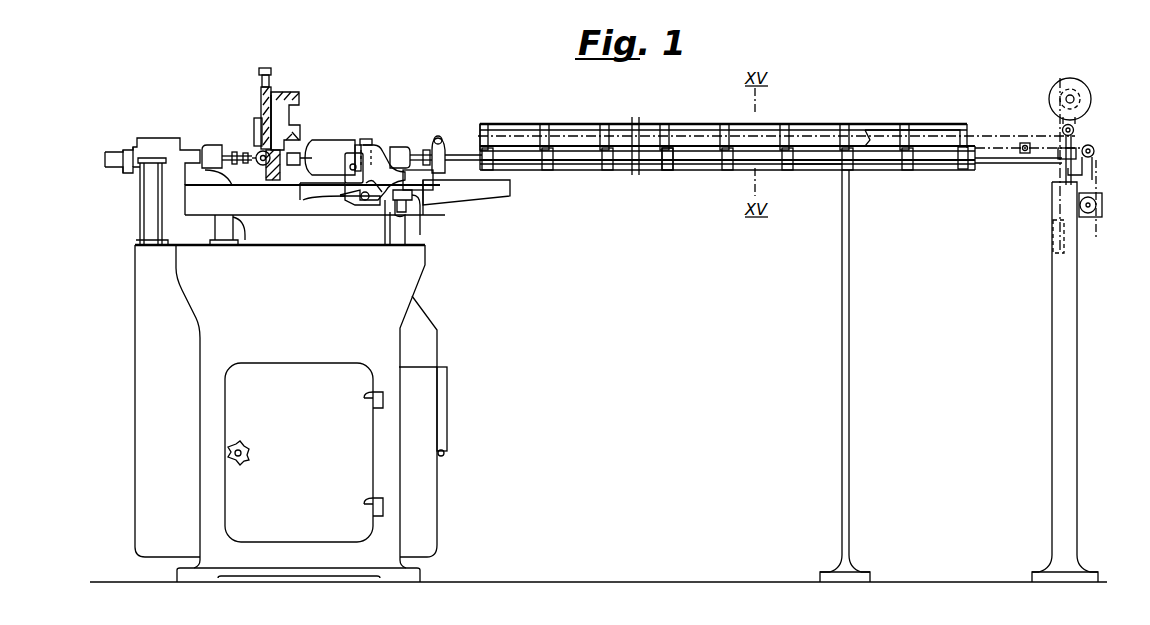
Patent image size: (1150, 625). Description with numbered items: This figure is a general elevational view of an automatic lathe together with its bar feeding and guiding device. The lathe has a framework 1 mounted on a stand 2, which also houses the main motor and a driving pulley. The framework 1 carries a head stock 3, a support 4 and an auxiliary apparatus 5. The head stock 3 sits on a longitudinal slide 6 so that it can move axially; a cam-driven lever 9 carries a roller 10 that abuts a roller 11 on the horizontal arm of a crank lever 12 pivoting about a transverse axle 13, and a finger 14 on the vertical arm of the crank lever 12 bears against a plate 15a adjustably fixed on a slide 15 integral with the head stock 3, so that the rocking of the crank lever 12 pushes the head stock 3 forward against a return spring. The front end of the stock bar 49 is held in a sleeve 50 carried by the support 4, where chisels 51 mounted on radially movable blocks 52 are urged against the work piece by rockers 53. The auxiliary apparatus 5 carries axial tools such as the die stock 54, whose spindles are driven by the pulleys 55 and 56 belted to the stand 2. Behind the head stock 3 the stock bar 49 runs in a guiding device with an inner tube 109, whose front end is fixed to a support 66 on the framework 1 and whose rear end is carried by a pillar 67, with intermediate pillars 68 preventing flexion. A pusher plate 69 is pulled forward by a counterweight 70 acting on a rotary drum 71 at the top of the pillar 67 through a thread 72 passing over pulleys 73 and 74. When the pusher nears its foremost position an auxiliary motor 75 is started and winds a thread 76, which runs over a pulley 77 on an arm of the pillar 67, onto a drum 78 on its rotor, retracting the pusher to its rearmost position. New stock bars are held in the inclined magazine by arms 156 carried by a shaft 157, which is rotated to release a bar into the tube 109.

The framework 1 is at (305, 212).
The stand 2 is at (392, 302).
The head stock 3 is at (322, 143).
The support 4 is at (290, 120).
The auxiliary apparatus 5 is at (214, 150).
The longitudinal slide 6 is at (410, 170).
The lever 9 is at (401, 218).
The roller 10 is at (407, 203).
The roller 11 is at (410, 188).
The crank lever 12 is at (388, 172).
The transverse axle 13 is at (366, 203).
The finger 14 is at (370, 152).
The slide 15 is at (346, 158).
The plate 15a is at (350, 183).
The stock bar 49 is at (419, 150).
The sleeve 50 is at (272, 172).
The chisels 51 is at (256, 112).
The blocks 52 is at (262, 128).
The rockers 53 is at (272, 80).
The die stock 54 is at (244, 150).
The pulley 55 is at (133, 156).
The pulley 56 is at (157, 158).
The support 66 is at (446, 172).
The pillar 67 is at (1066, 310).
The intermediate pillars 68 is at (845, 212).
The plate 69 is at (1024, 142).
The counterweight 70 is at (1052, 243).
The rotary drum 71 is at (1059, 86).
The thread 72 is at (988, 134).
The pulley 73 is at (1075, 131).
The pulley 74 is at (440, 150).
The auxiliary motor 75 is at (1100, 194).
The thread 76 is at (1094, 163).
The pulley 77 is at (1094, 150).
The drum 78 is at (1092, 216).
The inner tube 109 is at (574, 165).
The arms 156 is at (672, 166).
The shaft 157 is at (806, 165).